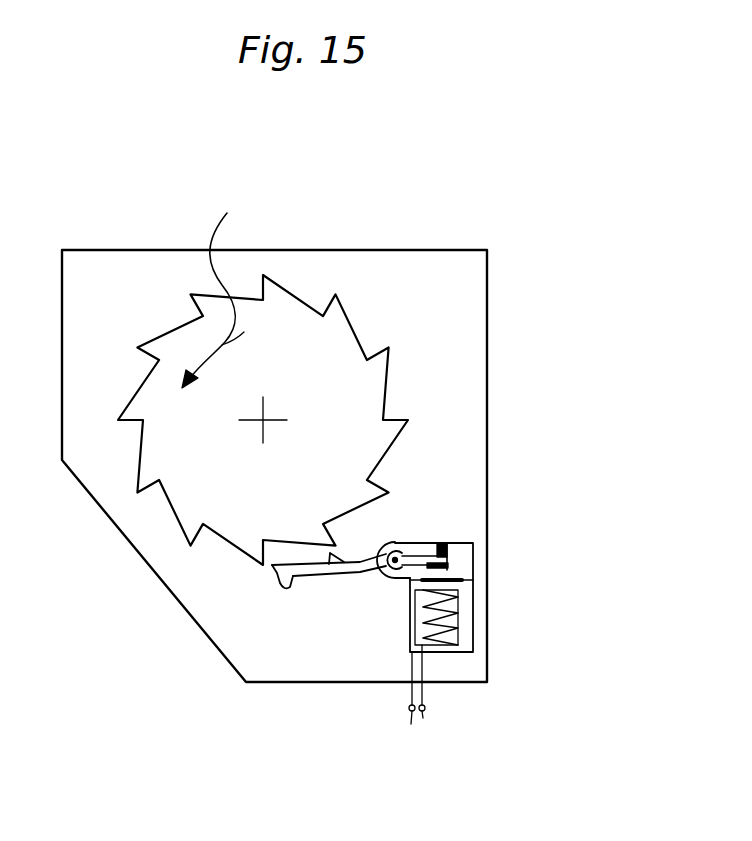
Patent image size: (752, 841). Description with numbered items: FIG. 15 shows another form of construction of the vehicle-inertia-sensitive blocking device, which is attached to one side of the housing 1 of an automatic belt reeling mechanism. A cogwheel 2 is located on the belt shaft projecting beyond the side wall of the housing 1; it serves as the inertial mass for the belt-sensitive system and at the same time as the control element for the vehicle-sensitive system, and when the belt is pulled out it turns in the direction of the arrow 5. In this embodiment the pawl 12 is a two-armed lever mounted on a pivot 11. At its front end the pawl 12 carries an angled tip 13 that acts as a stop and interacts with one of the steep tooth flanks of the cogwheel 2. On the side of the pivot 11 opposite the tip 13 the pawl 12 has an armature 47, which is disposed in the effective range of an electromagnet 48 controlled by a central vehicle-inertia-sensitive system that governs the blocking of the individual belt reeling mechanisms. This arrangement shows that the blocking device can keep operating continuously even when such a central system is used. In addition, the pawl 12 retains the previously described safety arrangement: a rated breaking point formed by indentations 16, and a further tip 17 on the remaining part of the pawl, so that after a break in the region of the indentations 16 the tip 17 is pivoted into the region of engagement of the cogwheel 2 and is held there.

The housing 1 is at (403, 295).
The cogwheel 2 is at (334, 372).
The arrow 5 is at (216, 286).
The pivot 11 is at (398, 545).
The pawl 12 is at (385, 569).
The angled tip 13 is at (273, 571).
The indentations 16 is at (327, 570).
The further tip 17 is at (334, 552).
The armature 47 is at (455, 569).
The electromagnet 48 is at (465, 630).